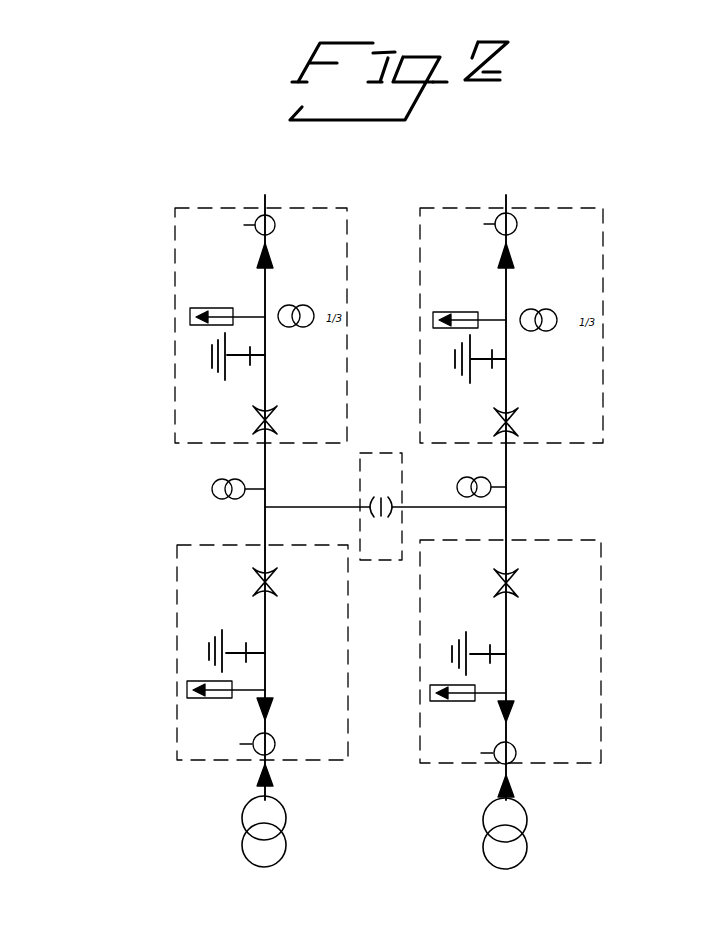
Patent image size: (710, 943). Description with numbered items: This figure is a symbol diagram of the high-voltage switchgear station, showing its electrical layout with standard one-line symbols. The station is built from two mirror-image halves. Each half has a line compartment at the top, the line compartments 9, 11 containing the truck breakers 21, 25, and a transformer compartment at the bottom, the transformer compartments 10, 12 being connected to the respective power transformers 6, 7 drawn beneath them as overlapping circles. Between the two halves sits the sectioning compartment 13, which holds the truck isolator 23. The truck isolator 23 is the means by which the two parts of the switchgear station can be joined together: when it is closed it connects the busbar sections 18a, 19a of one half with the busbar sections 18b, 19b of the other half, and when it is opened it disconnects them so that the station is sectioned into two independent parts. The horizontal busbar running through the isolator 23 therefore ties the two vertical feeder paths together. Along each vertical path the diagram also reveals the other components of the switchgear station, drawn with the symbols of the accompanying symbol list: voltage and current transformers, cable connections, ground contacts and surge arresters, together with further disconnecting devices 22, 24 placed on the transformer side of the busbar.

The transformer 6 is at (242, 846).
The transformer 7 is at (520, 855).
The line compartment 9 is at (212, 218).
The transformer compartment 10 is at (205, 755).
The line compartment 11 is at (380, 458).
The transformer compartment 12 is at (580, 752).
The sectioning compartment 13 is at (577, 215).
The busbar section 18a is at (297, 508).
The busbar section 19a is at (228, 489).
The busbar section 18b is at (478, 510).
The busbar section 19b is at (474, 487).
The truck breaker 21 is at (255, 420).
The disconnector 22 is at (255, 585).
The truck isolator 23 is at (380, 516).
The disconnector 24 is at (510, 597).
The truck breaker 25 is at (512, 410).